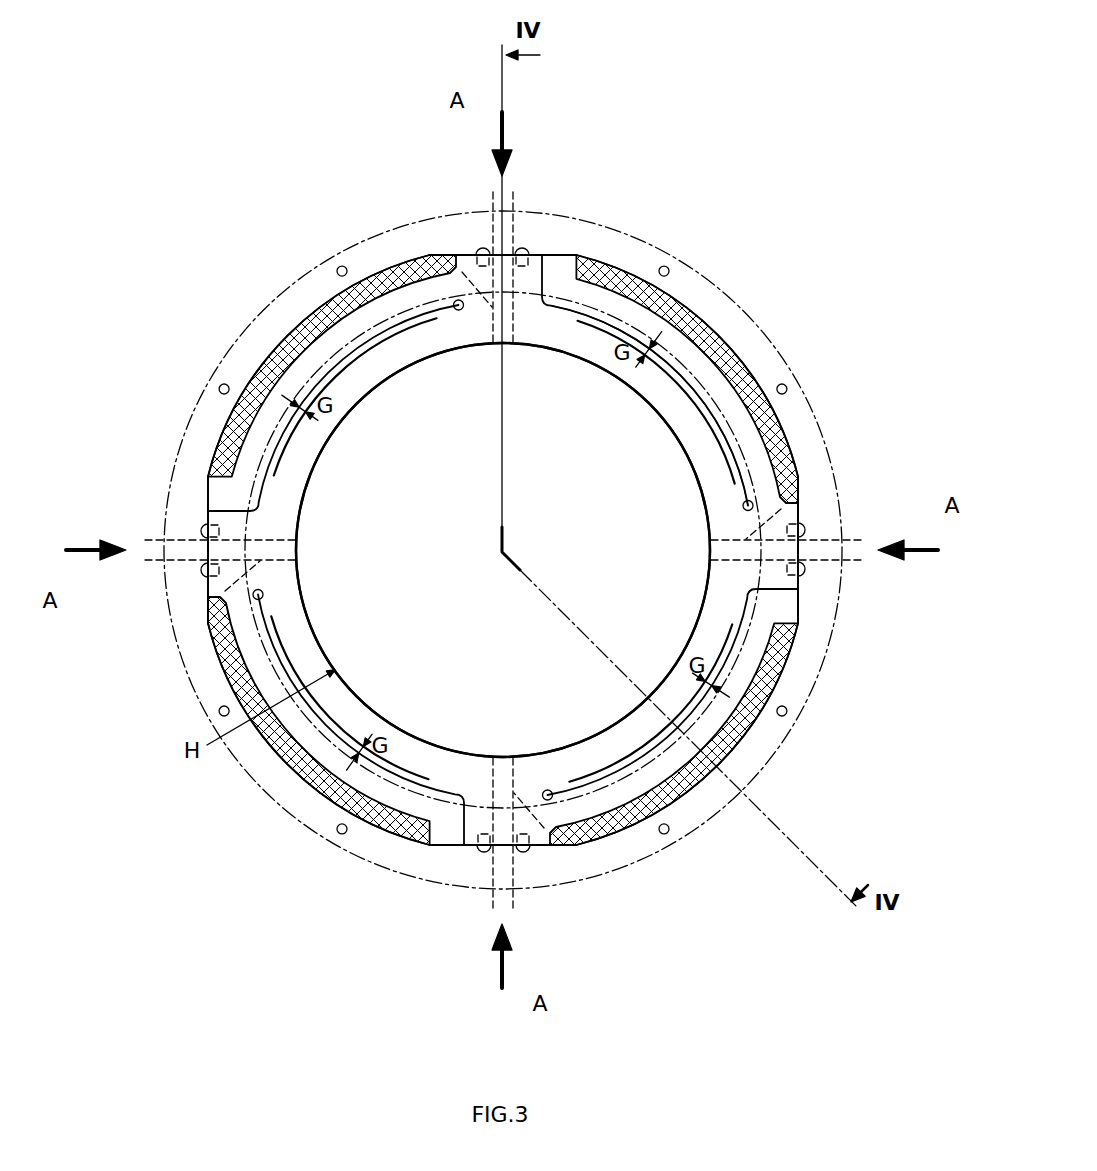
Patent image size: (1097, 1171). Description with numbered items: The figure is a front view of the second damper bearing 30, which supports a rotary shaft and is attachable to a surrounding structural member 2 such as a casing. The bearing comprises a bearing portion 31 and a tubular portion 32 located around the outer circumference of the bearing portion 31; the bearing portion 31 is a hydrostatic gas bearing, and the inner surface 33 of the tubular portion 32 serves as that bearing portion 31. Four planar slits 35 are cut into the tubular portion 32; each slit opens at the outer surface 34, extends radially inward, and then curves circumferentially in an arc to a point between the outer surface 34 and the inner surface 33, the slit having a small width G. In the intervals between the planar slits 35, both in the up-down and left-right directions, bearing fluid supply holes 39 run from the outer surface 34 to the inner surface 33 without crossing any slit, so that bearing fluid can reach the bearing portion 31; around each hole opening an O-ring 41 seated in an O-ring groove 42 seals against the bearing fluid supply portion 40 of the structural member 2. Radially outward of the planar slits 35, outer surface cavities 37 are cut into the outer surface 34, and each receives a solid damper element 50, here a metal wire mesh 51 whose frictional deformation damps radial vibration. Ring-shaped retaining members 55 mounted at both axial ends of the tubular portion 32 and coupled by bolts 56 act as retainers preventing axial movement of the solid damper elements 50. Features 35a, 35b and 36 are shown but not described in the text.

The structural member 2 is at (366, 92).
The second damper bearing 30 is at (504, 454).
The bearing portion 31 is at (668, 428).
The tubular portion 32 is at (800, 622).
The inner surface 33 is at (503, 550).
The outer surface 34 is at (597, 320).
The planar slit 35 is at (612, 268).
The extension portion 35a is at (548, 262).
The end portion 35b is at (422, 262).
The pin 36 is at (480, 246).
The outer surface cavity 37 is at (318, 298).
The bearing fluid supply hole 39 is at (450, 262).
The bearing fluid supply portion 40 is at (514, 192).
The O-ring 41 is at (527, 246).
The O-ring groove 42 is at (462, 268).
The solid damper element 50 is at (720, 950).
The wire mesh 51 is at (500, 550).
The retaining member 55 is at (288, 820).
The bolt 56 is at (334, 836).